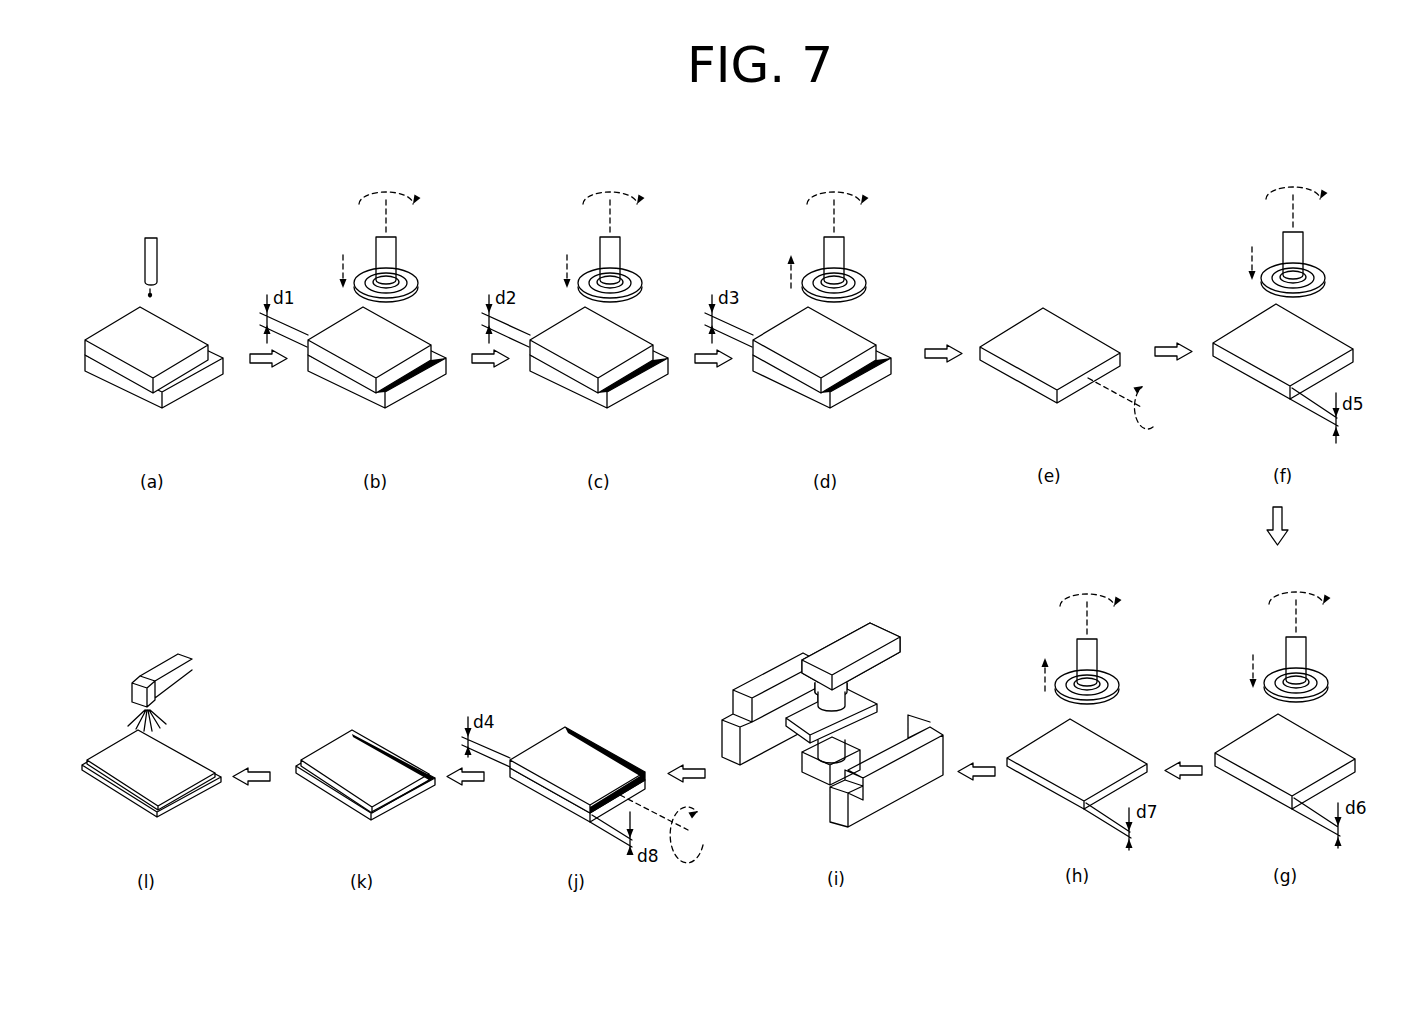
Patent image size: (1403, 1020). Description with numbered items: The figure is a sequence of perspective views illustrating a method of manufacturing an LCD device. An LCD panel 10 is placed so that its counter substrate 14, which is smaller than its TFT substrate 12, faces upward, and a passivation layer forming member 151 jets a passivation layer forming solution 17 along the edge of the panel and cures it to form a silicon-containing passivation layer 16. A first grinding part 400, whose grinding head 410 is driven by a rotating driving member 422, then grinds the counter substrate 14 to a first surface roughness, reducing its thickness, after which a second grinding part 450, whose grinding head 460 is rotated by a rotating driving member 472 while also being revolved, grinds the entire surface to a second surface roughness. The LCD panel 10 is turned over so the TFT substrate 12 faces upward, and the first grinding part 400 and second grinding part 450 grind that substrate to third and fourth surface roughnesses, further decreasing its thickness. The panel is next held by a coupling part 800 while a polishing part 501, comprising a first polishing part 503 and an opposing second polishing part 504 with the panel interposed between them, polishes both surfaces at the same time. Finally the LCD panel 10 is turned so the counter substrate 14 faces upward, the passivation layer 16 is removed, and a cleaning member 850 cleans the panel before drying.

The LCD panel 10 is at (706, 585).
The TFT substrate 12 is at (1028, 383).
The counter substrate 14 is at (535, 770).
The passivation layer 16 is at (640, 763).
The passivation layer forming solution 17 is at (156, 295).
The passivation layer forming member 151 is at (158, 248).
The first grinding part 400 is at (847, 243).
The grinding head 410 is at (419, 283).
The rotating driving member 422 is at (398, 250).
The second grinding part 450 is at (960, 447).
The grinding head 460 is at (643, 283).
The rotating driving member 472 is at (622, 250).
The polishing part 501 is at (793, 652).
The first polishing part 503 is at (830, 625).
The second polishing part 504 is at (793, 744).
The coupling part 800 is at (900, 817).
The cleaning member 850 is at (153, 665).